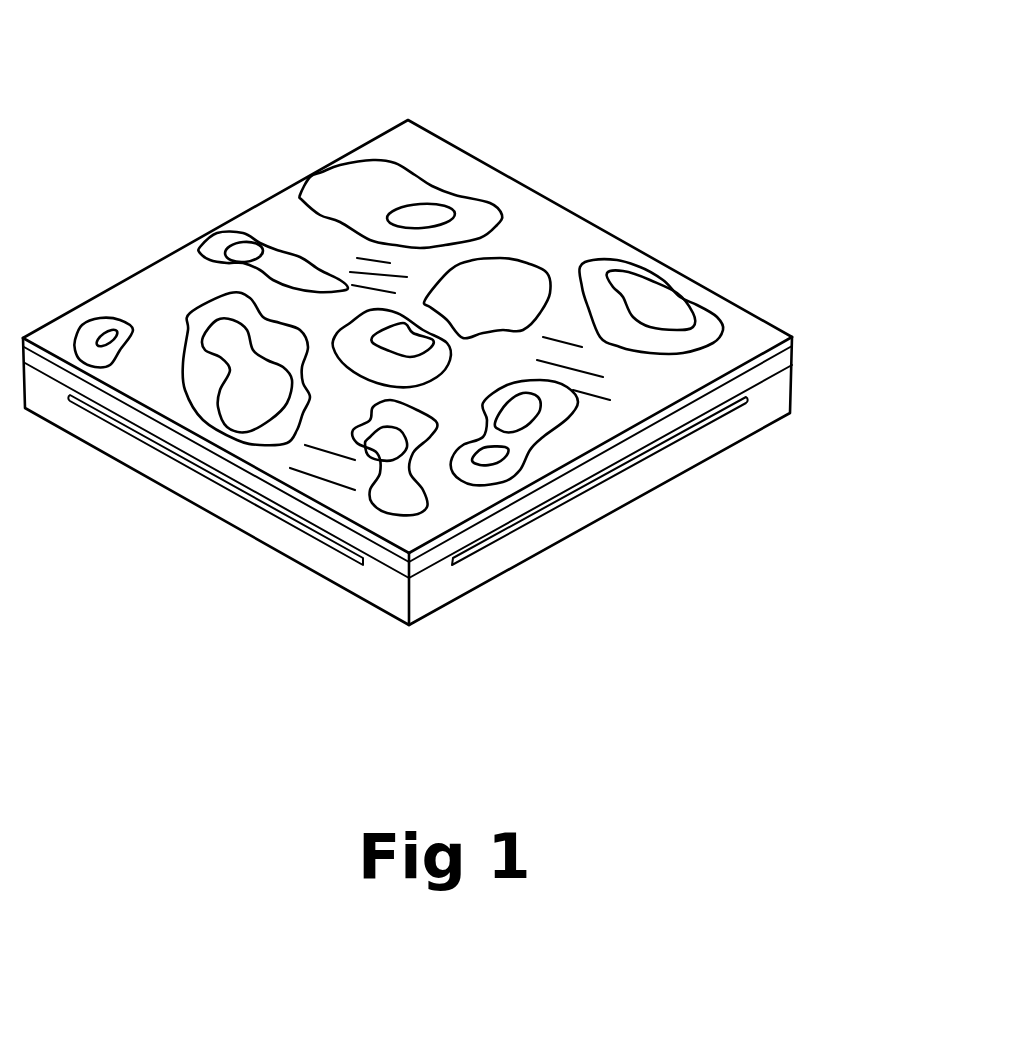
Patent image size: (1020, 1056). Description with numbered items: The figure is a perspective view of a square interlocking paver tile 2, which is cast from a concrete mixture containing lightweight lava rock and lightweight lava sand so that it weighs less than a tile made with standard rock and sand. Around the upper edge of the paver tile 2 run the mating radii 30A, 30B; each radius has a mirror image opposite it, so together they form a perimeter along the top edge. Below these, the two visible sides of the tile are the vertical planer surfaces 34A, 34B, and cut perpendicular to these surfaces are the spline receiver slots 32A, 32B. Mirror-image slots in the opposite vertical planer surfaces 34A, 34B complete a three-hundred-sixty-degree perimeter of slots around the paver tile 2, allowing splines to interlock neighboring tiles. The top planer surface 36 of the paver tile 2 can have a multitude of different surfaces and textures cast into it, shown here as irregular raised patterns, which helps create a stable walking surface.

The paver tile 2 is at (432, 186).
The top planer surface 36 is at (523, 284).
The mating radius 30A is at (352, 527).
The mating radius 30B is at (752, 360).
The spline receiver slot 32A is at (248, 503).
The spline receiver slot 32B is at (558, 510).
The vertical planer surface 34A is at (340, 580).
The vertical planer surface 34B is at (438, 592).